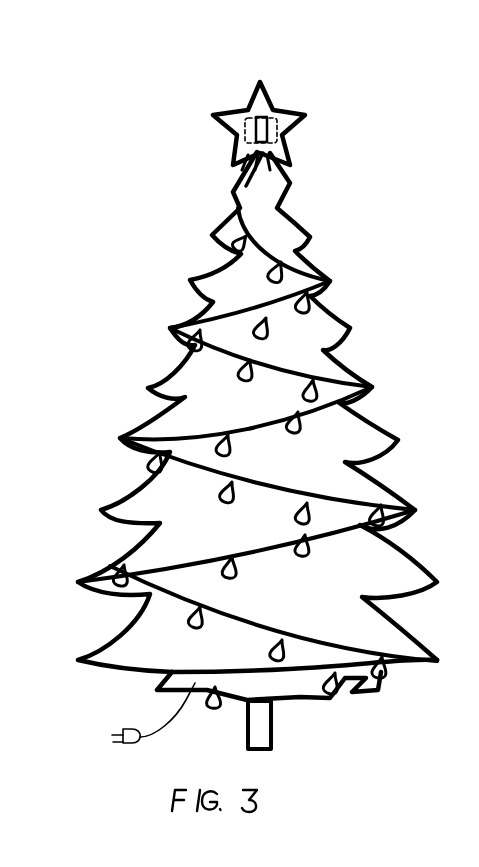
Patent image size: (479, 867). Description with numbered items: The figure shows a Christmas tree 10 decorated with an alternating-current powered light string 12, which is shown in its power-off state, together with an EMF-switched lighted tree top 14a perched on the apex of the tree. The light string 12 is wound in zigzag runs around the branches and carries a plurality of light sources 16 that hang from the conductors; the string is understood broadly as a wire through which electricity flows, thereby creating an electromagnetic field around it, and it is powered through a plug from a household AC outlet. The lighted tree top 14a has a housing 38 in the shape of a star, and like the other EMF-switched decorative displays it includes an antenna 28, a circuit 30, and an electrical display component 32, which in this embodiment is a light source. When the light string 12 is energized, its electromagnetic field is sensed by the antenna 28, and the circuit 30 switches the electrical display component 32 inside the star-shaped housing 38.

The Christmas tree 10 is at (293, 214).
The light string 12 is at (288, 361).
The EMF-switched lighted tree top 14a is at (281, 87).
The light source 16 is at (225, 244).
The antenna 28 is at (233, 198).
The circuit 30 is at (275, 117).
The electrical display component 32 is at (247, 130).
The housing 38 is at (256, 93).